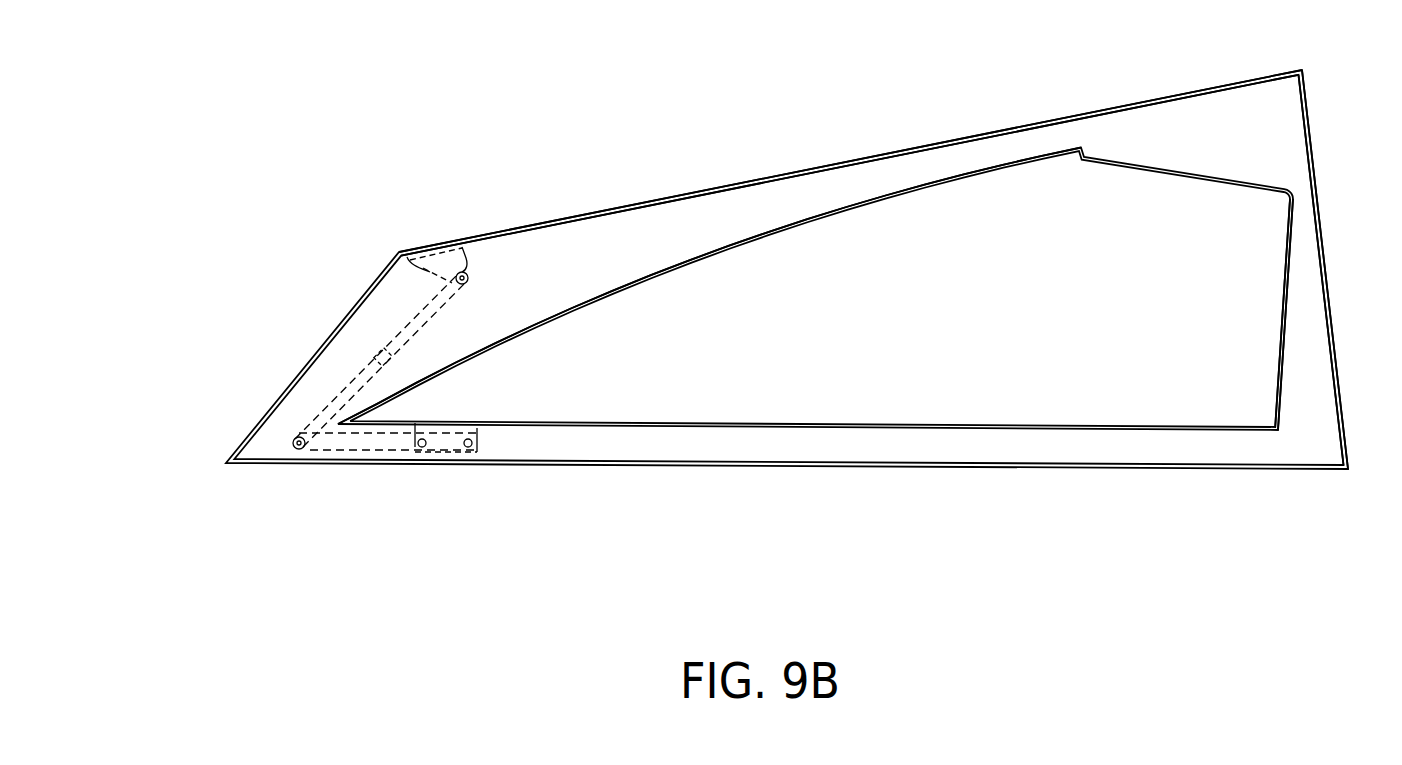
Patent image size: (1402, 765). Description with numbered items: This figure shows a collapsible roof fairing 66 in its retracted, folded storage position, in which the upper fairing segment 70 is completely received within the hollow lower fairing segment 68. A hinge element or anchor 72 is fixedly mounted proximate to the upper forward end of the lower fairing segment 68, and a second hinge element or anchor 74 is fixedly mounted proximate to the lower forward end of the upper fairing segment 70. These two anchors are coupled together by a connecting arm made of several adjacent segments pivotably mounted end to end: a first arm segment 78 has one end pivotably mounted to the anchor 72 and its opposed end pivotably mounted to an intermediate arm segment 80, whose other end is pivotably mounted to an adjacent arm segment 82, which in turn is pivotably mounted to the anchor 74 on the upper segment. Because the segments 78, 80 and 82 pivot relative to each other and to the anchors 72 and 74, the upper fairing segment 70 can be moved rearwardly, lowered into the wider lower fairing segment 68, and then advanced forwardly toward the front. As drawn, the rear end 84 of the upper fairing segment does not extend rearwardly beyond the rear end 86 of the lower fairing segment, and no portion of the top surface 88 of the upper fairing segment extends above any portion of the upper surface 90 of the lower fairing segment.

The roof fairing 66 is at (184, 409).
The lower fairing segment 68 is at (787, 269).
The upper fairing segment 70 is at (815, 289).
The hinge element or anchor 72 is at (441, 258).
The hinge element or anchor 74 is at (477, 432).
The first arm segment 78 is at (441, 310).
The intermediate arm segment 80 is at (347, 385).
The arm segment 82 is at (343, 441).
The rear end of the upper fairing segment 84 is at (1281, 412).
The rear end of lower fairing segment 86 is at (1324, 258).
The top surface of the upper fairing segment 88 is at (650, 275).
The upper surface of the lower fairing segment 90 is at (813, 170).